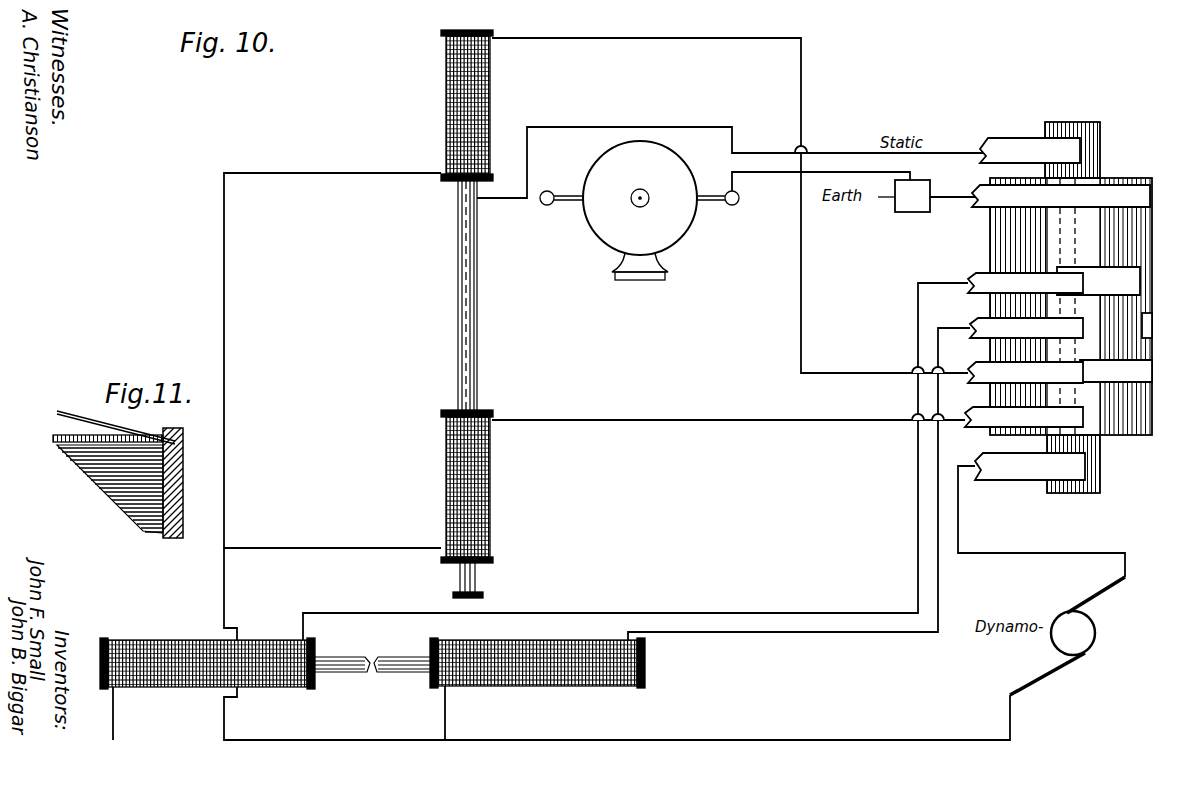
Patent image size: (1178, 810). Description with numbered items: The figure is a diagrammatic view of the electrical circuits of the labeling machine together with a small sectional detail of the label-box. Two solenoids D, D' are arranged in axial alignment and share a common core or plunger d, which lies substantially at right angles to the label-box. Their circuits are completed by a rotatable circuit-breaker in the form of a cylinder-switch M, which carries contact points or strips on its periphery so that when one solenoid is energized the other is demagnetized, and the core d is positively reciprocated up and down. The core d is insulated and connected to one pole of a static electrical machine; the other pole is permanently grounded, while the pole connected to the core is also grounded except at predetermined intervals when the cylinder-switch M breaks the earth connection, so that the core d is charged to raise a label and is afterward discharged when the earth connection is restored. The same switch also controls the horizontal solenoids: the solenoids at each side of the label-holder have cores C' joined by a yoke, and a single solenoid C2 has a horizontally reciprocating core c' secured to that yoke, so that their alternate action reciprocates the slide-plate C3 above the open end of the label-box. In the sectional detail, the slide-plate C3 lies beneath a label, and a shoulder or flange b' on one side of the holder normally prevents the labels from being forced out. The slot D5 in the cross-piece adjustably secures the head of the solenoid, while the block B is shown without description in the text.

In FIG. 10, the solenoid D' is at (440, 105).
In FIG. 10, the slot D5 is at (639, 210).
In FIG. 10, the core d is at (477, 284).
In FIG. 10, the solenoid D is at (439, 504).
In FIG. 10, the cylinder-switch M is at (980, 238).
In FIG. 10, the solenoid C2 is at (187, 687).
In FIG. 10, the core c' is at (366, 689).
In FIG. 10, the core C' is at (515, 681).
In FIG. 11, the slide-plate C3 is at (65, 440).
In FIG. 11, the shoulder or flange b' is at (116, 422).
In FIG. 11, the block B is at (192, 500).